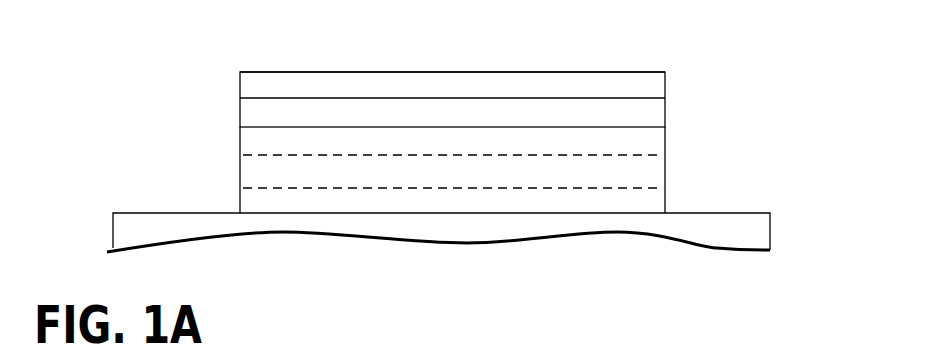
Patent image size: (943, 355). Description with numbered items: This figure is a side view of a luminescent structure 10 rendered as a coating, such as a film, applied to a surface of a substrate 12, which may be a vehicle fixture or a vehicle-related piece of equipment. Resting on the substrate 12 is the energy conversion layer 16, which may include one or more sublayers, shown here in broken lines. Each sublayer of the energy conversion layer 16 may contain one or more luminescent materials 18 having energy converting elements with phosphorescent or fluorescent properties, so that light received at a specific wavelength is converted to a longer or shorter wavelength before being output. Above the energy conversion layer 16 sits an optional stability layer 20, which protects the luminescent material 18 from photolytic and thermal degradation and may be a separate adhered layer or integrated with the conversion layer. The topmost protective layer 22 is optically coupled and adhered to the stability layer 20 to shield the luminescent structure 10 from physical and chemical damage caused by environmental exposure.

The luminescent structure 10 is at (600, 46).
The substrate 12 is at (712, 212).
The energy conversion layer 16 is at (240, 169).
The luminescent material 18 is at (615, 174).
The stability layer 20 is at (240, 112).
The protective layer 22 is at (338, 71).